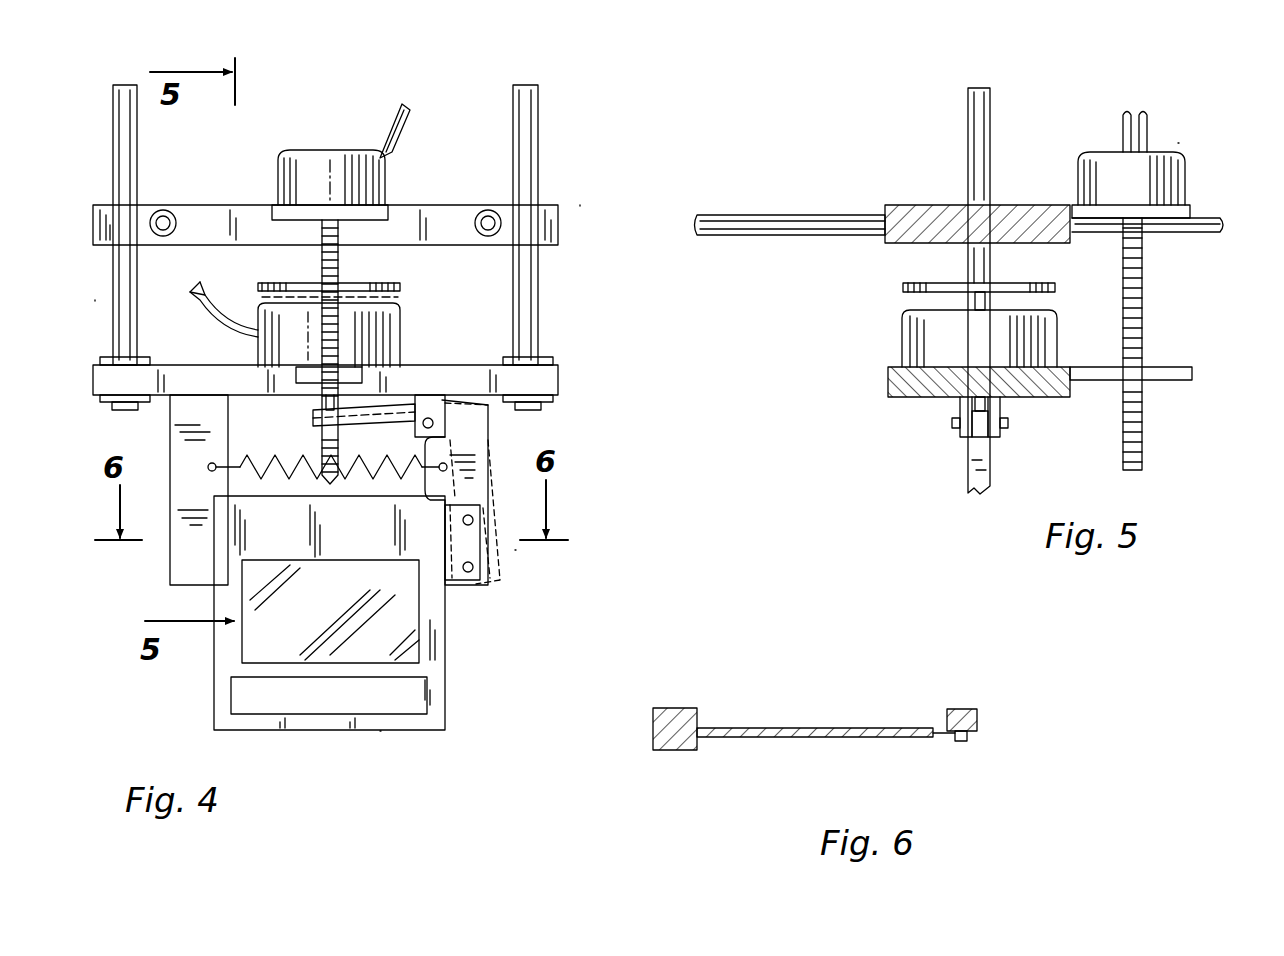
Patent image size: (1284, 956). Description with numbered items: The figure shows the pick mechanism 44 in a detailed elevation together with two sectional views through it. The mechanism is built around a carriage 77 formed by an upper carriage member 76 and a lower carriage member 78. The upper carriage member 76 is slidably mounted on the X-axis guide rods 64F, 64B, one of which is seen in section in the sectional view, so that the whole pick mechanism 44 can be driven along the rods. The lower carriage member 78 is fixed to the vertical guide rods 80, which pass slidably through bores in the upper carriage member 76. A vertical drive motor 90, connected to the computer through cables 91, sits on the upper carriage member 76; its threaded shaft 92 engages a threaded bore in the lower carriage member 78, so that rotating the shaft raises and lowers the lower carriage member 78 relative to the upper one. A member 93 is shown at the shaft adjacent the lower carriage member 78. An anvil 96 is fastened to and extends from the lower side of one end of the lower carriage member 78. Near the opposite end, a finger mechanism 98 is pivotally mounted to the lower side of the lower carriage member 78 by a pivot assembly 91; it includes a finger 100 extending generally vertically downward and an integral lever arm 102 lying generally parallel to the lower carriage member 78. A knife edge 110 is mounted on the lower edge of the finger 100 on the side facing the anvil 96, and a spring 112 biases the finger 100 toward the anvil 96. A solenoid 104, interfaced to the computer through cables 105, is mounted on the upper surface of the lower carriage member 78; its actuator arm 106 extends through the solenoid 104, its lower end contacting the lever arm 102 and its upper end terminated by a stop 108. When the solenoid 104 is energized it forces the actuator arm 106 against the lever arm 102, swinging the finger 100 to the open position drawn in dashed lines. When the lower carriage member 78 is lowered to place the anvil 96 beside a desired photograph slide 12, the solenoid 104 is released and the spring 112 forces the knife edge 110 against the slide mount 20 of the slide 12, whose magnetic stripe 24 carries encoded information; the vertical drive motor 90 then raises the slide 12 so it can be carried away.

In FIG. 4, the photograph slide 12 is at (380, 735).
In FIG. 4, the slide mount 20 is at (445, 628).
In FIG. 6, the slide mount 20 is at (775, 728).
In FIG. 4, the magnetic stripe 24 is at (322, 705).
In FIG. 4, the pick mechanism 44 is at (583, 202).
In FIG. 5, the pick mechanism 44 is at (1180, 140).
In FIG. 4, the X-axis guide rod 64F is at (170, 210).
In FIG. 4, the X-axis guide rod 64B is at (488, 210).
In FIG. 5, the X-axis guide rod 64B is at (758, 240).
In FIG. 4, the upper carriage member 76 is at (414, 215).
In FIG. 5, the upper carriage member 76 is at (908, 208).
In FIG. 4, the carriage 77 is at (100, 296).
In FIG. 4, the lower carriage member 78 is at (562, 378).
In FIG. 5, the lower carriage member 78 is at (888, 385).
In FIG. 4, the vertical guide rods 80 is at (120, 128).
In FIG. 4, the vertical drive motor 90 is at (330, 152).
In FIG. 5, the vertical drive motor 90 is at (1185, 150).
In FIG. 4, the cables 91 is at (405, 112).
In FIG. 5, the cables 91 is at (1125, 128).
In FIG. 4, the threaded shaft 92 is at (340, 265).
In FIG. 5, the threaded shaft 92 is at (1145, 305).
In FIG. 4, the block 93 is at (365, 378).
In FIG. 5, the block 93 is at (1192, 375).
In FIG. 4, the anvil 96 is at (172, 560).
In FIG. 6, the anvil 96 is at (675, 708).
In FIG. 4, the finger mechanism 98 is at (520, 552).
In FIG. 4, the finger 100 is at (475, 432).
In FIG. 5, the finger 100 is at (990, 458).
In FIG. 6, the finger 100 is at (962, 708).
In FIG. 4, the lever arm 102 is at (358, 415).
In FIG. 5, the lever arm 102 is at (972, 440).
In FIG. 4, the solenoid 104 is at (400, 320).
In FIG. 5, the solenoid 104 is at (910, 328).
In FIG. 4, the cables 105 is at (205, 285).
In FIG. 4, the actuator arm 106 is at (322, 402).
In FIG. 5, the actuator arm 106 is at (1000, 297).
In FIG. 4, the stop 108 is at (400, 287).
In FIG. 5, the stop 108 is at (905, 285).
In FIG. 4, the knife edge 110 is at (470, 565).
In FIG. 6, the knife edge 110 is at (950, 738).
In FIG. 4, the spring 112 is at (285, 440).